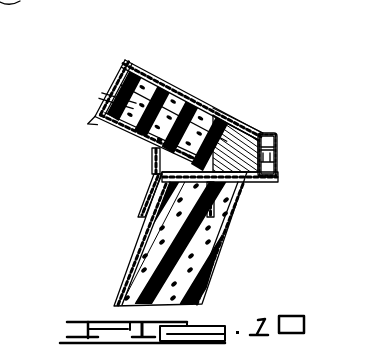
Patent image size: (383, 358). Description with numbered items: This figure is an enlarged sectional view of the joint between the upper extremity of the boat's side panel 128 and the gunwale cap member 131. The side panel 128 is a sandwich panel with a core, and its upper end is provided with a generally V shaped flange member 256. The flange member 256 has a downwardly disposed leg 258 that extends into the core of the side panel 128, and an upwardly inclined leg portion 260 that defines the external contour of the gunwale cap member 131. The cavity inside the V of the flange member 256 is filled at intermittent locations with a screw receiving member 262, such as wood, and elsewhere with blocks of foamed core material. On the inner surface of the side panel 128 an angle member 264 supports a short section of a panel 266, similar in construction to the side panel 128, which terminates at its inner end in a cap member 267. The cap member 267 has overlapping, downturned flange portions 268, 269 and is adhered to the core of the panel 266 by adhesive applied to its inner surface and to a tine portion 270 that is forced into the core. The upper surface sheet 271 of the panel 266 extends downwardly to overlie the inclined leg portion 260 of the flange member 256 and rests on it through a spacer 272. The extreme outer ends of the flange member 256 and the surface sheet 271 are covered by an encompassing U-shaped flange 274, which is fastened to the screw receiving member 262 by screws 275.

The side panel 128 is at (148, 240).
The gunwale cap member 131 is at (193, 80).
The flange member 256 is at (256, 179).
The downwardly disposed leg 258 is at (214, 212).
The upwardly inclined leg portion 260 is at (258, 131).
The screw receiving member 262 is at (273, 138).
The angle member 264 is at (152, 167).
The panel 266 is at (151, 92).
The cap member 267 is at (104, 98).
The downturned flange portion 268 is at (126, 61).
The downturned flange portion 269 is at (92, 127).
The tine portion 270 is at (133, 82).
The upper surface sheet 271 is at (193, 102).
The spacer 272 is at (221, 127).
The U-shaped flange 274 is at (274, 152).
The screws 275 is at (274, 162).